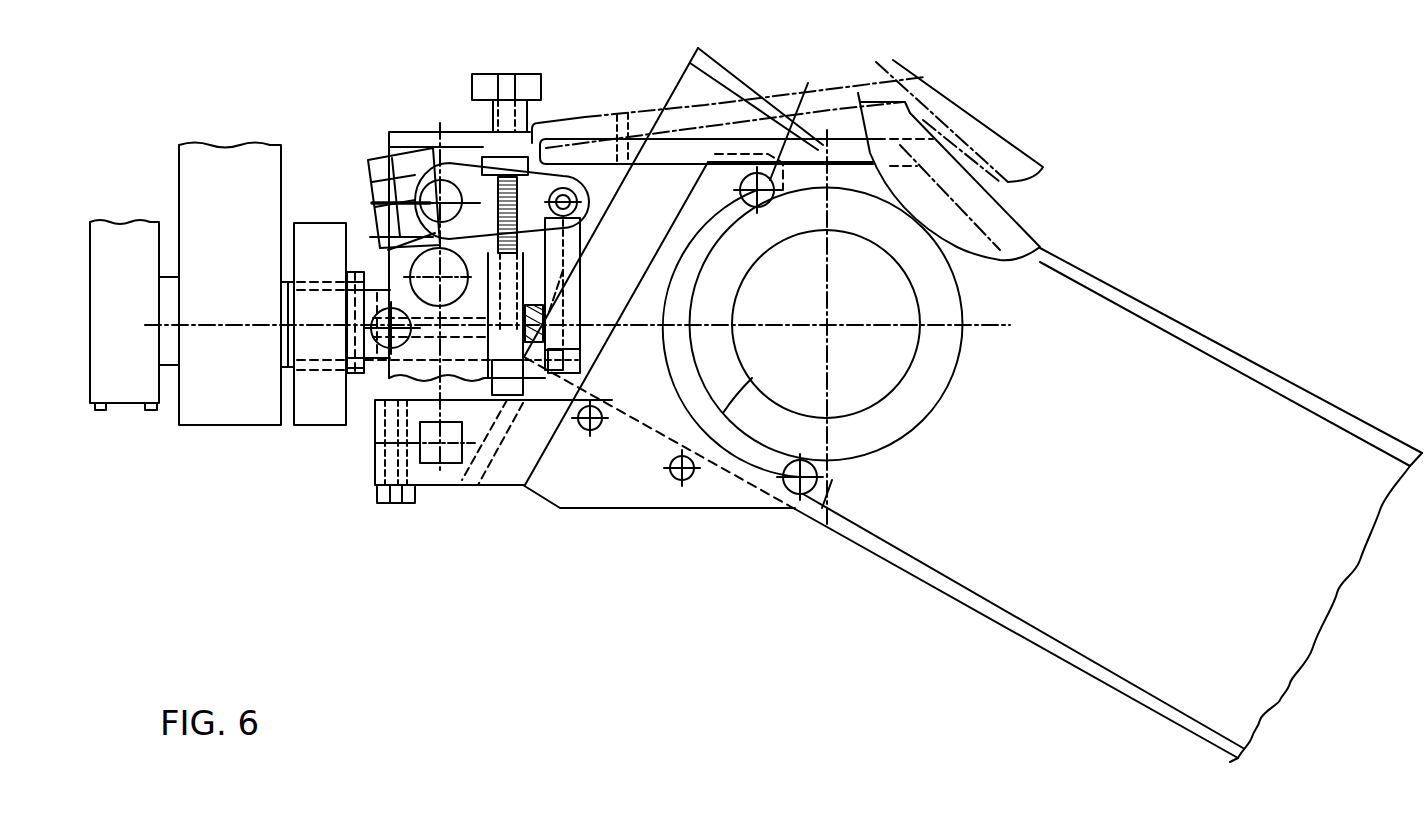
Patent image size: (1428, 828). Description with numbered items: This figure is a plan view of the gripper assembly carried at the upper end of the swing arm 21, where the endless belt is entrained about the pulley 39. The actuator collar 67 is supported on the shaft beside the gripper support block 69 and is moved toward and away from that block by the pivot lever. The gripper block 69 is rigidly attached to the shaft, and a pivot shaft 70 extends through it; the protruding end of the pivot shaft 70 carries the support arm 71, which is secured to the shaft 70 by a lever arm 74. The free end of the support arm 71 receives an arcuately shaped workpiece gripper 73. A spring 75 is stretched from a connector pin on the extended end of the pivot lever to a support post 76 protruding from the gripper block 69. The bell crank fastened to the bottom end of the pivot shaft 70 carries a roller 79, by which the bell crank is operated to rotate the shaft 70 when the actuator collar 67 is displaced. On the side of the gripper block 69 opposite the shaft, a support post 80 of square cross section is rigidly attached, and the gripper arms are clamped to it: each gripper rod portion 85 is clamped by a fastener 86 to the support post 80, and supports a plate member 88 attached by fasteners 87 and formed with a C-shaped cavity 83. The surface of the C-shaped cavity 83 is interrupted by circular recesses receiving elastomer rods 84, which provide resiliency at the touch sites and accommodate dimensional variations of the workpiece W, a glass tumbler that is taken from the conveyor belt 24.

The pulley 39 is at (128, 250).
The swing arm 21 is at (205, 428).
The actuator collar 67 is at (305, 428).
The gripper support block 69 is at (385, 388).
The pivot shaft 70 is at (432, 180).
The lever arm 74 is at (372, 200).
The roller 79 is at (390, 306).
The spring 75 is at (580, 274).
The support post 76 is at (578, 372).
The elastomer rod 84 is at (772, 198).
The workpiece gripper 73 is at (1035, 235).
The conveyor belt 24 is at (1200, 334).
The C-shaped cavity 83 is at (752, 378).
The workpiece W is at (948, 392).
The fasteners 87 is at (668, 468).
The plate member 88 is at (693, 510).
The gripper rod portion 85 is at (500, 487).
The support post 80 is at (447, 465).
The fastener 86 is at (392, 505).
The support arm 71 is at (820, 148).